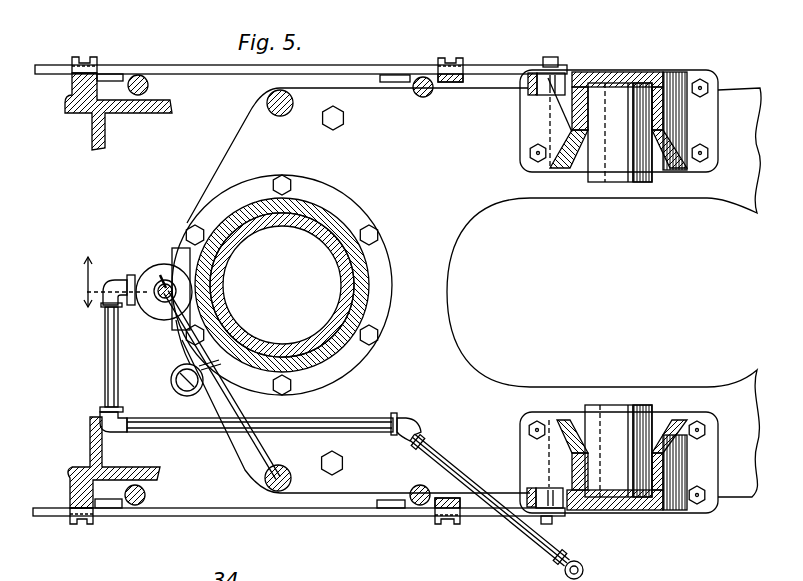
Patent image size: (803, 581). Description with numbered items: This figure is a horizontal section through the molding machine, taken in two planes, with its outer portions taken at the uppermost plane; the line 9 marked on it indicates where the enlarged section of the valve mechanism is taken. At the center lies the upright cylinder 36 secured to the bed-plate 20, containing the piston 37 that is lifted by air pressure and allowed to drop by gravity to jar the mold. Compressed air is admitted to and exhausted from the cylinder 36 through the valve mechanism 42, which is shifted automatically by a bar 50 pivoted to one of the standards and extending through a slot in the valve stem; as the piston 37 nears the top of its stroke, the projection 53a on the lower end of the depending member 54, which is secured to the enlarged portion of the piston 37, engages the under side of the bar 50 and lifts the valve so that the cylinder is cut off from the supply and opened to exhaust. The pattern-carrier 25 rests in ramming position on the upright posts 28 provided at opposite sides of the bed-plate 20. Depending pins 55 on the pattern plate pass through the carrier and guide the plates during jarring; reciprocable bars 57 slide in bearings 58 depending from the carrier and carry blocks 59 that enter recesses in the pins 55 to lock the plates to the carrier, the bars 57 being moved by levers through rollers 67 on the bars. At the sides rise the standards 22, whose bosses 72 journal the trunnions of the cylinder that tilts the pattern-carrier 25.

The section line 9 is at (104, 344).
The bed-plate 20 is at (466, 292).
The standards 22 is at (618, 70).
The pattern-carrier 25 is at (161, 114).
The upright posts 28 is at (273, 113).
The cylinder 36 is at (363, 275).
The piston 37 is at (350, 303).
The valve mechanism 42 is at (153, 282).
The bar 50 is at (250, 438).
The projection 53a is at (208, 366).
The depending member 54 is at (170, 384).
The depending pins 55 is at (148, 79).
The reciprocable bars 57 is at (385, 66).
The bearings 58 is at (85, 57).
The blocks 59 is at (108, 74).
The rollers 67 is at (553, 82).
The bosses 72 is at (627, 180).